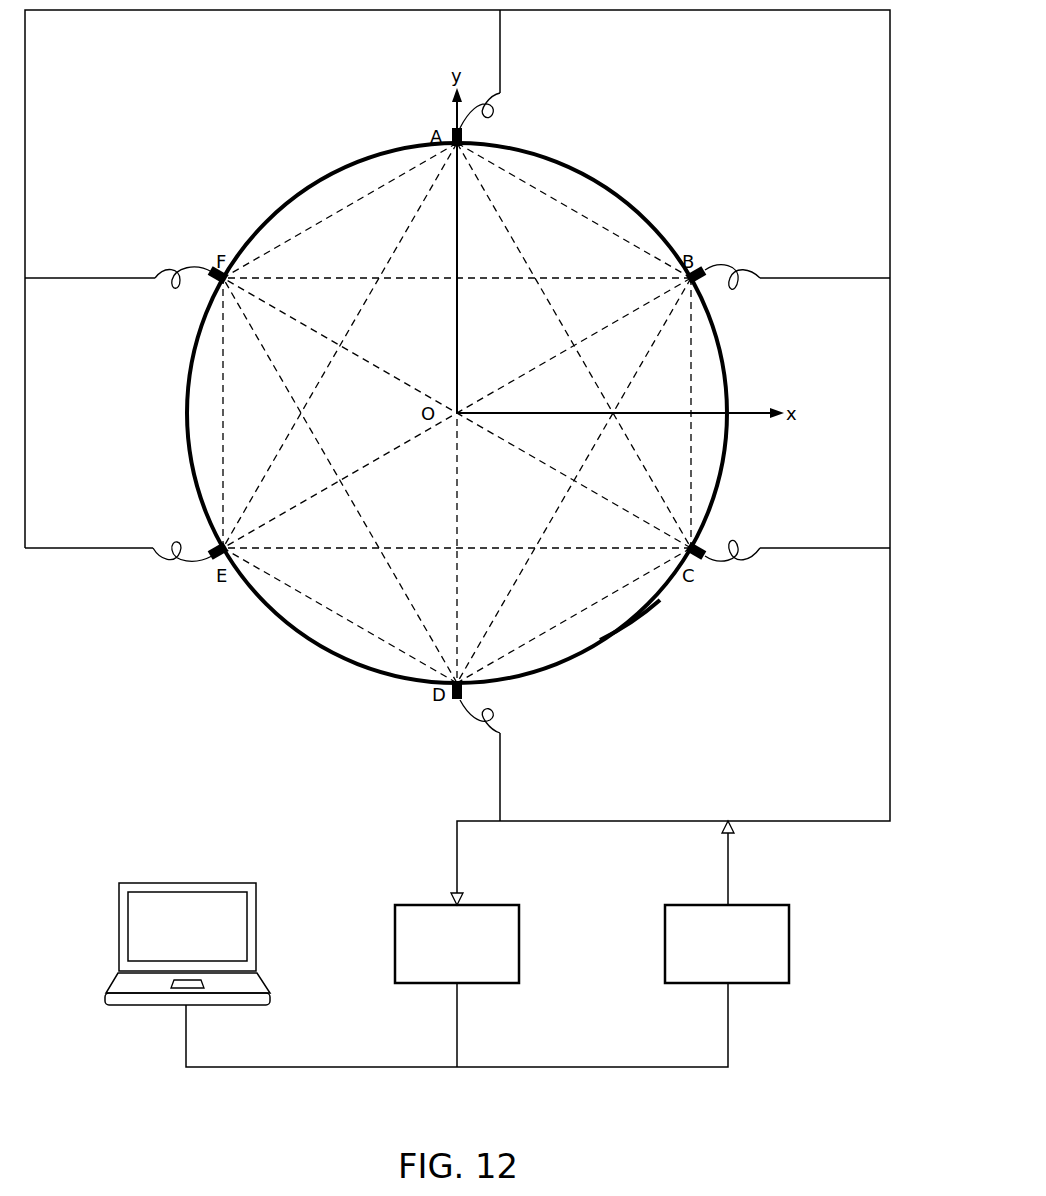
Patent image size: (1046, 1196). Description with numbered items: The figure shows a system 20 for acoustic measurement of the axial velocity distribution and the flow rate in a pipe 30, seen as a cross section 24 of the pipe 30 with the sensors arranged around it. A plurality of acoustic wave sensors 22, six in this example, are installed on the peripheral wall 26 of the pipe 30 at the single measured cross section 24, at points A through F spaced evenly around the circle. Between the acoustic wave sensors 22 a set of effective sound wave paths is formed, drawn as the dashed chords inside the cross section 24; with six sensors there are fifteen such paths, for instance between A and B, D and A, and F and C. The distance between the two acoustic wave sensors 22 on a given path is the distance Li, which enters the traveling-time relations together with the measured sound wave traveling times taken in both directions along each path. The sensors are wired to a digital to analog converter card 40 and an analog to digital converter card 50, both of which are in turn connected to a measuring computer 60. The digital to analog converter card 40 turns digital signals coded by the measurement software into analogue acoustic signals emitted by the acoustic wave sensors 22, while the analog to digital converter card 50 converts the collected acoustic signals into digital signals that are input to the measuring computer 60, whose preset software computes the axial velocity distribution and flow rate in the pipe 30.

The system 20 is at (910, 253).
The acoustic wave sensor 22 is at (456, 128).
The cross section 24 is at (322, 585).
The peripheral wall 26 is at (722, 352).
The pipe 30 is at (633, 632).
The distance between two acoustic wave sensors Li is at (628, 243).
The digital to analog converter card 40 is at (480, 905).
The analog to digital converter card 50 is at (750, 905).
The measuring computer 60 is at (187, 883).